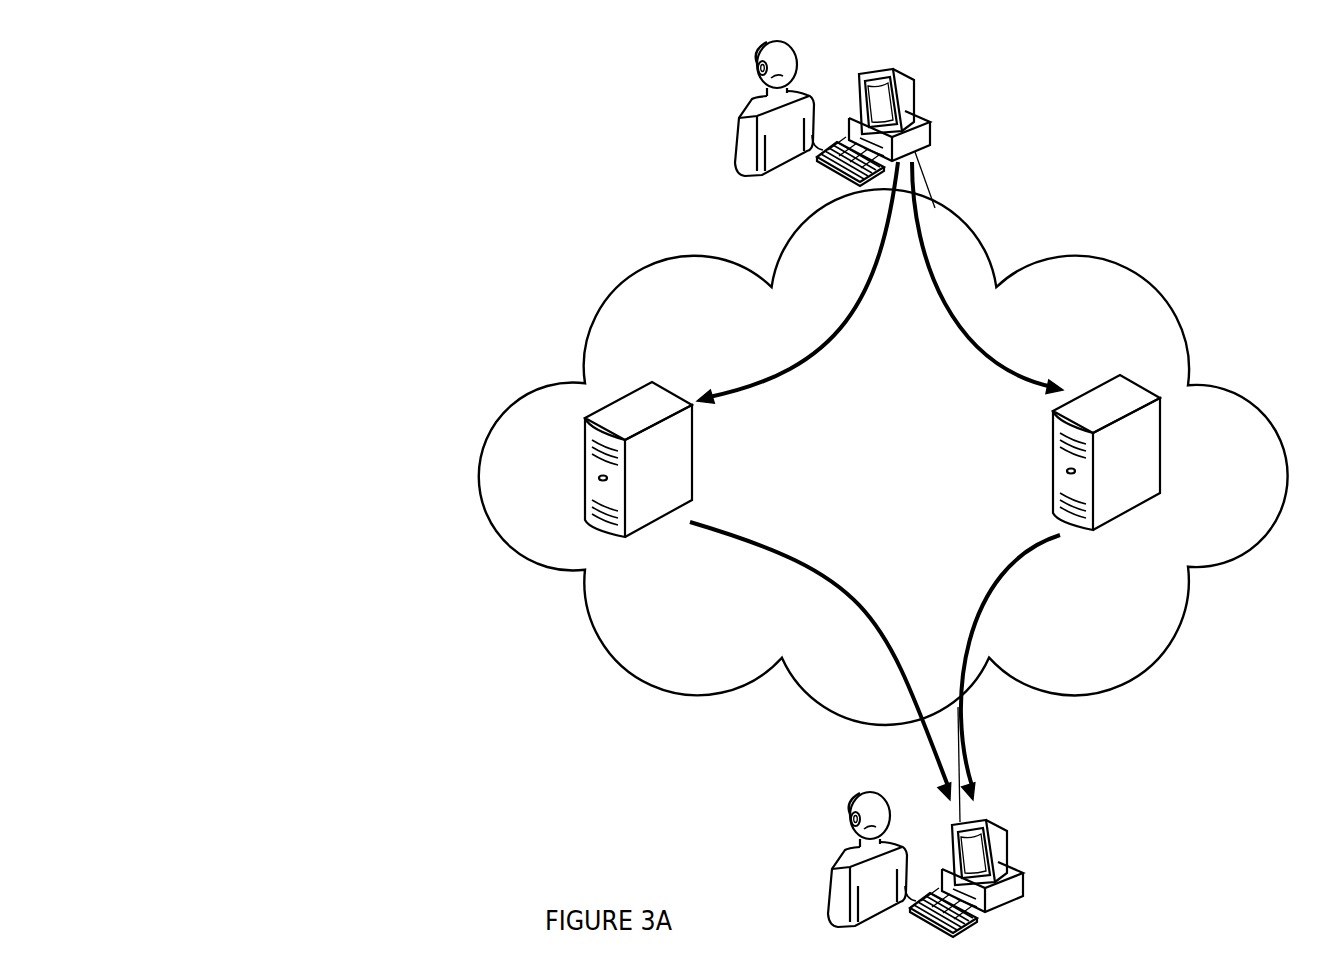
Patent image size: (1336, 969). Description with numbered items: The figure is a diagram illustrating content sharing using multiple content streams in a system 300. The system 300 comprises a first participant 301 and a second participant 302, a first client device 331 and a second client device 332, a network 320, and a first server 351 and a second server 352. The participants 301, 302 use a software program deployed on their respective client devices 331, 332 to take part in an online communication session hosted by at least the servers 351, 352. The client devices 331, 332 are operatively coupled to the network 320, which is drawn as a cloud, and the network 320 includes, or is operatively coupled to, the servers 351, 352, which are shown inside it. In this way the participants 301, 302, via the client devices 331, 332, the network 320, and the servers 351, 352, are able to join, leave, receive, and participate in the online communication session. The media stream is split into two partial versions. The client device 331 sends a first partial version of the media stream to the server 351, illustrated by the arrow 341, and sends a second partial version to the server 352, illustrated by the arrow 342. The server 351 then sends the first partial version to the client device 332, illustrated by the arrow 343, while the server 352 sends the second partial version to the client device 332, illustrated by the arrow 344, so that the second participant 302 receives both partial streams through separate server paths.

The system 300 is at (181, 33).
The participant 301 is at (753, 90).
The participant 302 is at (852, 840).
The network 320 is at (977, 490).
The client device 331 is at (895, 70).
The client device 332 is at (1003, 827).
The arrow 341 is at (847, 327).
The arrow 342 is at (938, 300).
The arrow 343 is at (843, 590).
The arrow 344 is at (1008, 566).
The server 351 is at (583, 463).
The server 352 is at (1140, 506).